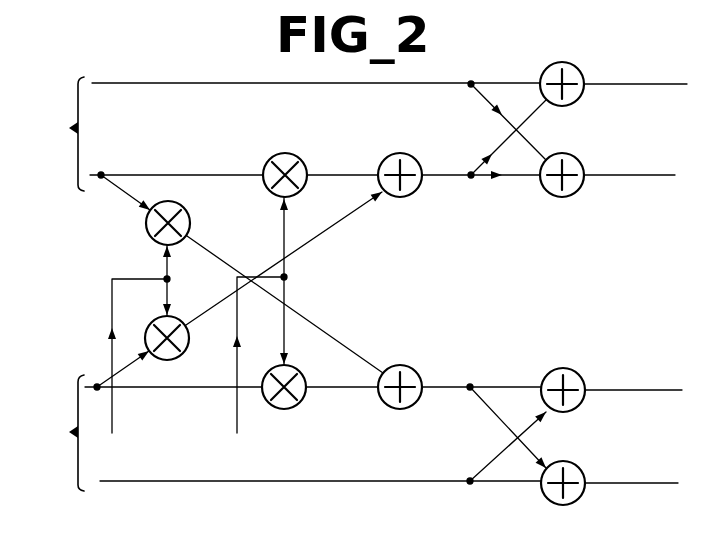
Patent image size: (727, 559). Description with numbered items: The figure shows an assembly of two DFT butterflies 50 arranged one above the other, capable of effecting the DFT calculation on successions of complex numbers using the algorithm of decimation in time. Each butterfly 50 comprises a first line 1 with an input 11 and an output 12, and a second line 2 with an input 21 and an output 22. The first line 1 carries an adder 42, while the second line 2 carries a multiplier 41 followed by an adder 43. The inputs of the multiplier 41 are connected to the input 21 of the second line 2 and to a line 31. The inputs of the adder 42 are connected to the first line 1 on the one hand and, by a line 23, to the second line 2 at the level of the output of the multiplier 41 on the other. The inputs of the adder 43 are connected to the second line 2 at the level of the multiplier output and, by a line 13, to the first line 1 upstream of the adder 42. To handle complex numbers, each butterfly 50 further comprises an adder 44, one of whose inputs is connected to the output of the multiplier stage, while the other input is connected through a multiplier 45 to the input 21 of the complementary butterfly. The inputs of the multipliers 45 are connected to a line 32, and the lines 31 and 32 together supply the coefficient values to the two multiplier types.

The first line 1 is at (508, 81).
The second line 2 is at (524, 183).
The input 11 is at (136, 83).
The output 12 is at (652, 82).
The line 13 is at (478, 98).
The input 21 is at (101, 175).
The output 22 is at (662, 173).
The line 23 is at (540, 110).
The line 31 is at (237, 427).
The line 32 is at (112, 416).
The multiplier 41 is at (265, 167).
The adder 42 is at (582, 70).
The adder 43 is at (592, 163).
The adder 44 is at (382, 166).
The multiplier 45 is at (146, 227).
The DFT butterfly 50 is at (58, 284).